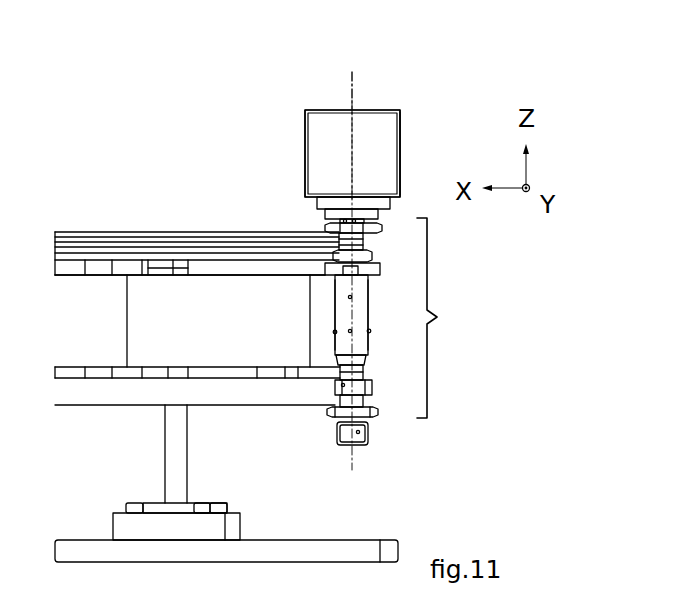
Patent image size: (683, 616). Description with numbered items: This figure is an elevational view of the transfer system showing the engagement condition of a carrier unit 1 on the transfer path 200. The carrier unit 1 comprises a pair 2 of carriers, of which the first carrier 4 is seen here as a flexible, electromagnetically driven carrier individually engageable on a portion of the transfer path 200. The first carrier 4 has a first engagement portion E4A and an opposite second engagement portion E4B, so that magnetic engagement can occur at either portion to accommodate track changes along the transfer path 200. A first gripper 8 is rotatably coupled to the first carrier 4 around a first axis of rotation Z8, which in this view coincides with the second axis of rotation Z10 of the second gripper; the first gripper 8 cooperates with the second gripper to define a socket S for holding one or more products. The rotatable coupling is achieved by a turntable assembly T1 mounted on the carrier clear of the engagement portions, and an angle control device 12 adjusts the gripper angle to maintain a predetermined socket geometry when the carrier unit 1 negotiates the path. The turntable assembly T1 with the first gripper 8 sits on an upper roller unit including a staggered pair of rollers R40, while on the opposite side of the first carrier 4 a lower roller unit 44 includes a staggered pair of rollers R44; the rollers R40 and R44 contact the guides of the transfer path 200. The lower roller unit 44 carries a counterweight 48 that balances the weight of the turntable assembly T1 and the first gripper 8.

The carrier unit 1 is at (417, 102).
The pair of carriers 2 is at (442, 318).
The first carrier 4 is at (339, 304).
The first gripper 8 is at (310, 141).
The angle control device 12 is at (403, 213).
The first lower roller unit 44 is at (338, 406).
The counterweight 48 is at (368, 441).
The transfer path 200 is at (213, 219).
The staggered pair of rollers R40 is at (373, 256).
The staggered pair of rollers R44 is at (336, 386).
The first engagement portion E4A is at (371, 333).
The second engagement portion E4B is at (333, 332).
The turntable assembly T1 is at (291, 205).
The socket S is at (408, 154).
The first axis of rotation Z8 is at (351, 82).
The second axis of rotation Z10 is at (351, 82).